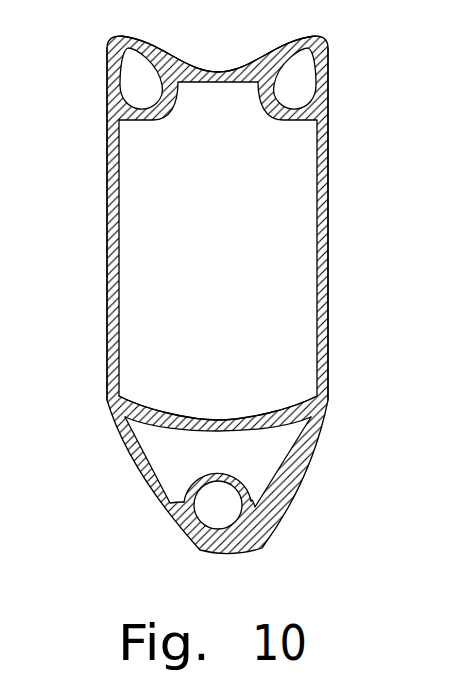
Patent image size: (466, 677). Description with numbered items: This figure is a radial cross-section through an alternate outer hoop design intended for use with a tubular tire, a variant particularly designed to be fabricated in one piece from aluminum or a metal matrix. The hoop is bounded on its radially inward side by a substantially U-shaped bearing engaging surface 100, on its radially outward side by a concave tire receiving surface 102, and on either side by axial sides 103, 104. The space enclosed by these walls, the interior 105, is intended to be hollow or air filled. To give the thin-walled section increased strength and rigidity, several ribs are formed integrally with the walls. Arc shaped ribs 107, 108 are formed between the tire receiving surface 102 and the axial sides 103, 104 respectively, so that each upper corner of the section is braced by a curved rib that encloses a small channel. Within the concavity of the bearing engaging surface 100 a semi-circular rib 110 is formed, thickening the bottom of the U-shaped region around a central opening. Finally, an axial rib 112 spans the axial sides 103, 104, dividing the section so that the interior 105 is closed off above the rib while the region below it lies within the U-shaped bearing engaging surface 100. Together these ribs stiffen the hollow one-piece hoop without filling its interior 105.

The bearing engaging surface 100 is at (270, 523).
The tire receiving surface 102 is at (217, 70).
The axial side 103 is at (107, 241).
The axial side 104 is at (328, 243).
The interior 105 is at (287, 301).
The arc shaped rib 107 is at (158, 124).
The arc shaped rib 108 is at (276, 124).
The semi-circular rib 110 is at (244, 474).
The axial rib 112 is at (218, 418).